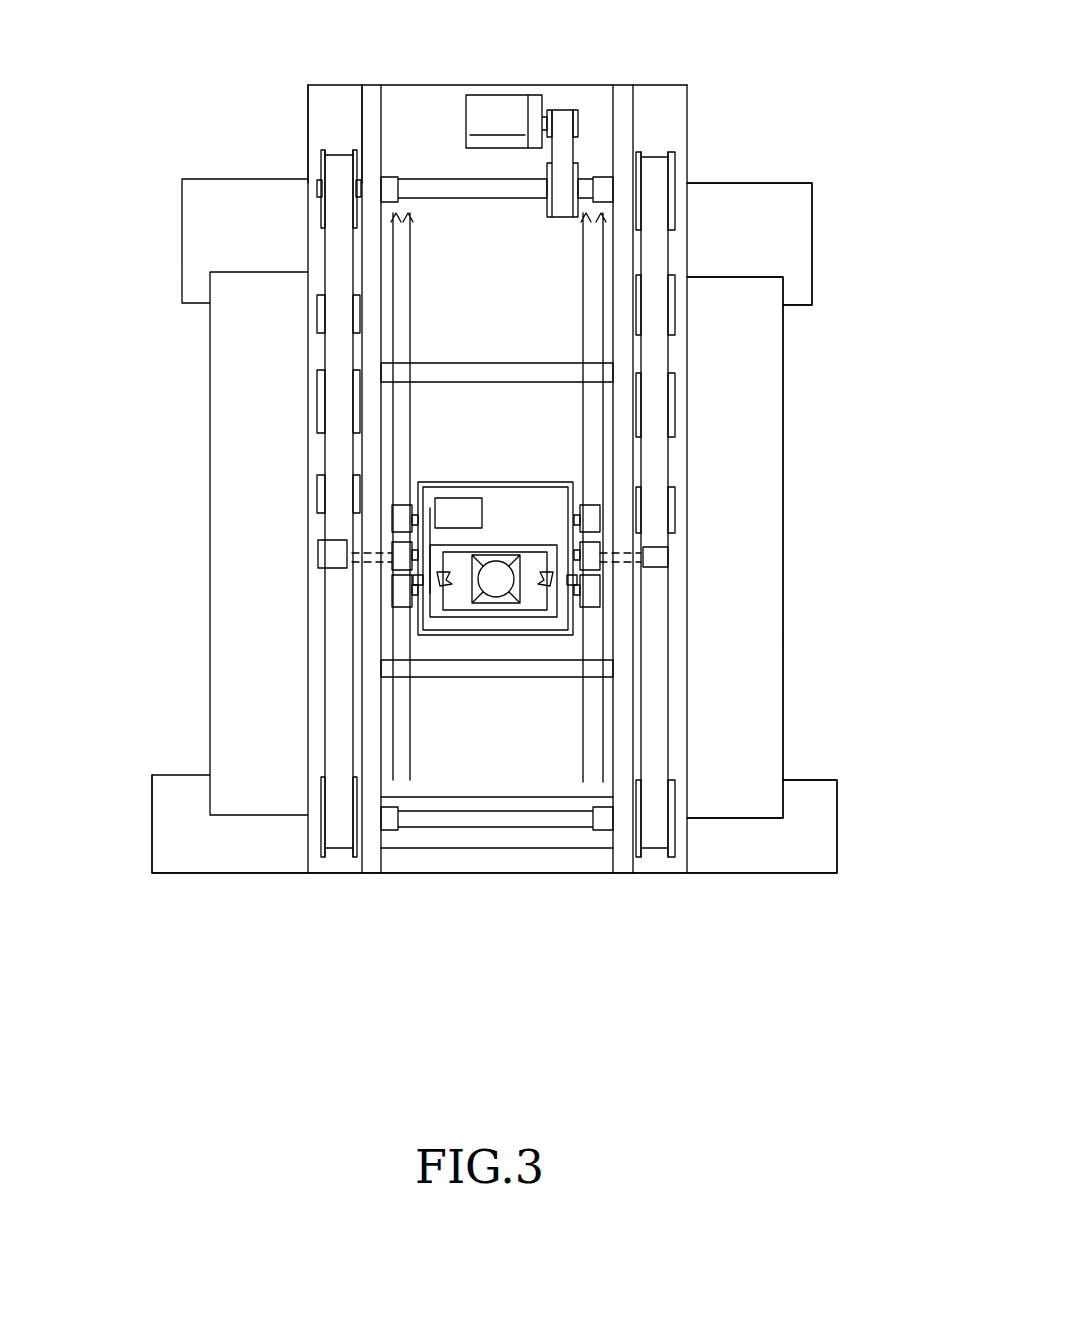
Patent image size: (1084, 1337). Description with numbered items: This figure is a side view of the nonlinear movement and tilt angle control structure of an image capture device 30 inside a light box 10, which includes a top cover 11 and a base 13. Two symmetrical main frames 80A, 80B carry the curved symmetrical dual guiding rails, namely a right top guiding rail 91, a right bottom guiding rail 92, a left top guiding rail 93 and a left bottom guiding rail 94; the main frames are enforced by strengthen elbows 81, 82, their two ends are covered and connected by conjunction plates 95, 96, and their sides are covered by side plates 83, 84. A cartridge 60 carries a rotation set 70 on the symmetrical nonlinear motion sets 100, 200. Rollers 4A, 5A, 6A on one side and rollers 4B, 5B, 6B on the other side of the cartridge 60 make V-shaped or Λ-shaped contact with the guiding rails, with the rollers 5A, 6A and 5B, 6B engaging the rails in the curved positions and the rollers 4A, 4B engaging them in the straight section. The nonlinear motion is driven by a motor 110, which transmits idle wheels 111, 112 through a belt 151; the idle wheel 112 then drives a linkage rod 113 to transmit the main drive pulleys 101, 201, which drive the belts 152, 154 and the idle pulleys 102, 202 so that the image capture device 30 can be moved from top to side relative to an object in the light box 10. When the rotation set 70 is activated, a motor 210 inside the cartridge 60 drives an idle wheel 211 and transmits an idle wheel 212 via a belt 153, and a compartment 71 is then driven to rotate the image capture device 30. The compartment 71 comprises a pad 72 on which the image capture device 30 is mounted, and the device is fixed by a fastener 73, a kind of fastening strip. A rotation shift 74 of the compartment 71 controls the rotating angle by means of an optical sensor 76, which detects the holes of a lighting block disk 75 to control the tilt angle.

The light box 10 is at (758, 287).
The top cover 11 is at (770, 183).
The base 13 is at (700, 873).
The image capture device 30 is at (505, 550).
The roller 4A is at (592, 552).
The roller 4B is at (392, 552).
The roller 5A is at (592, 592).
The roller 5B is at (392, 590).
The roller 6A is at (592, 520).
The roller 6B is at (392, 522).
The cartridge 60 is at (500, 455).
The rotation set 70 is at (488, 492).
The compartment 71 is at (487, 620).
The pad 72 is at (513, 555).
The fastener 73 is at (440, 578).
The rotation shift 74 is at (560, 577).
The lighting block disk 75 is at (578, 545).
The optical sensor 76 is at (568, 600).
The main frame 80A is at (620, 90).
The main frame 80B is at (373, 92).
The strengthen elbow 81 is at (512, 672).
The strengthen elbow 82 is at (488, 366).
The side plate 83 is at (688, 690).
The side plate 84 is at (310, 100).
The right top guiding rail 91 is at (585, 258).
The right bottom guiding rail 92 is at (585, 303).
The left top guiding rail 93 is at (405, 250).
The left bottom guiding rail 94 is at (405, 302).
The conjunction plate 95 is at (457, 85).
The conjunction plate 96 is at (545, 870).
The nonlinear motion set 100 is at (677, 360).
The main drive pulley 101 is at (673, 170).
The idle pulley 102 is at (672, 808).
The motor 110 is at (506, 121).
The idle wheel 111 is at (577, 120).
The idle wheel 112 is at (578, 172).
The linkage rod 113 is at (448, 177).
The belt 151 is at (573, 147).
The belt 152 is at (673, 247).
The belt 153 is at (425, 592).
The belt 154 is at (320, 250).
The nonlinear motion set 200 is at (312, 357).
The main drive pulley 201 is at (323, 185).
The idle pulley 202 is at (320, 835).
The motor 210 is at (395, 537).
The idle wheel 211 is at (405, 512).
The idle wheel 212 is at (420, 613).